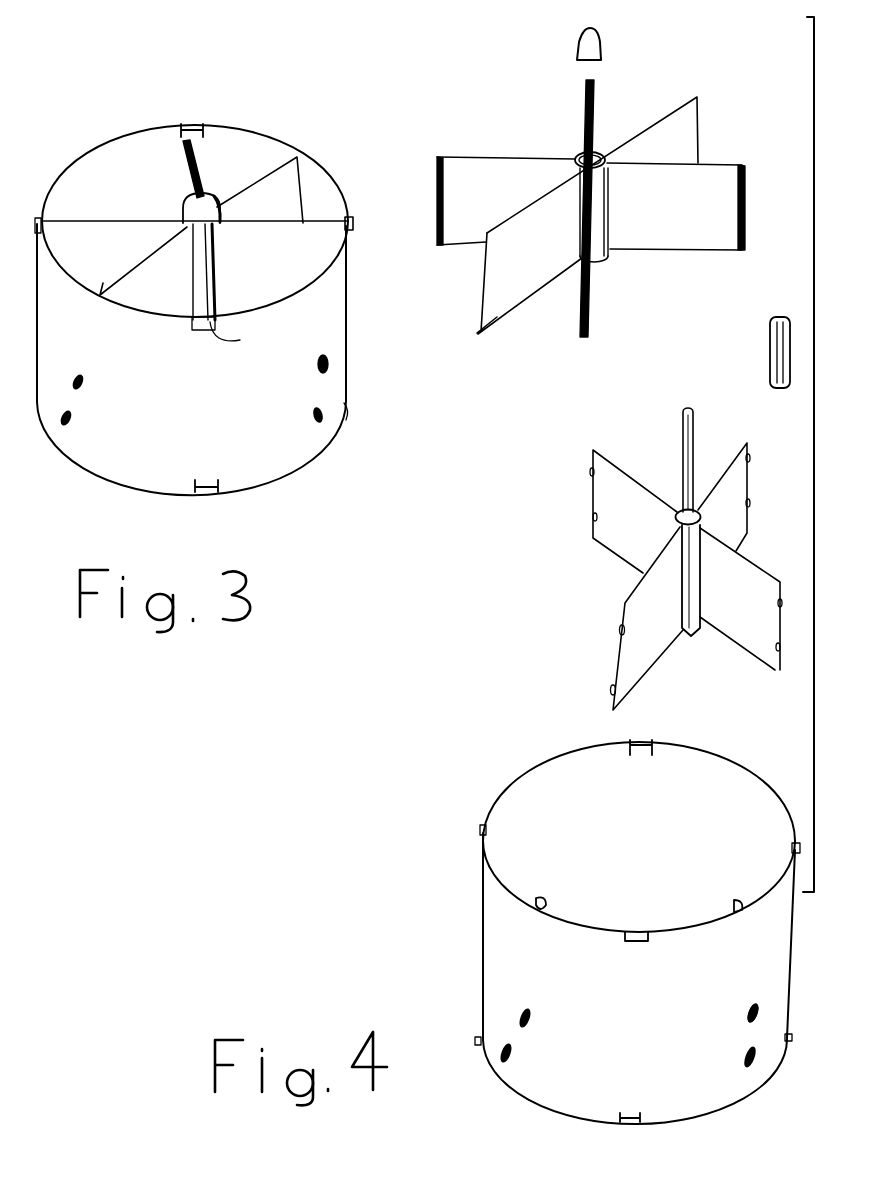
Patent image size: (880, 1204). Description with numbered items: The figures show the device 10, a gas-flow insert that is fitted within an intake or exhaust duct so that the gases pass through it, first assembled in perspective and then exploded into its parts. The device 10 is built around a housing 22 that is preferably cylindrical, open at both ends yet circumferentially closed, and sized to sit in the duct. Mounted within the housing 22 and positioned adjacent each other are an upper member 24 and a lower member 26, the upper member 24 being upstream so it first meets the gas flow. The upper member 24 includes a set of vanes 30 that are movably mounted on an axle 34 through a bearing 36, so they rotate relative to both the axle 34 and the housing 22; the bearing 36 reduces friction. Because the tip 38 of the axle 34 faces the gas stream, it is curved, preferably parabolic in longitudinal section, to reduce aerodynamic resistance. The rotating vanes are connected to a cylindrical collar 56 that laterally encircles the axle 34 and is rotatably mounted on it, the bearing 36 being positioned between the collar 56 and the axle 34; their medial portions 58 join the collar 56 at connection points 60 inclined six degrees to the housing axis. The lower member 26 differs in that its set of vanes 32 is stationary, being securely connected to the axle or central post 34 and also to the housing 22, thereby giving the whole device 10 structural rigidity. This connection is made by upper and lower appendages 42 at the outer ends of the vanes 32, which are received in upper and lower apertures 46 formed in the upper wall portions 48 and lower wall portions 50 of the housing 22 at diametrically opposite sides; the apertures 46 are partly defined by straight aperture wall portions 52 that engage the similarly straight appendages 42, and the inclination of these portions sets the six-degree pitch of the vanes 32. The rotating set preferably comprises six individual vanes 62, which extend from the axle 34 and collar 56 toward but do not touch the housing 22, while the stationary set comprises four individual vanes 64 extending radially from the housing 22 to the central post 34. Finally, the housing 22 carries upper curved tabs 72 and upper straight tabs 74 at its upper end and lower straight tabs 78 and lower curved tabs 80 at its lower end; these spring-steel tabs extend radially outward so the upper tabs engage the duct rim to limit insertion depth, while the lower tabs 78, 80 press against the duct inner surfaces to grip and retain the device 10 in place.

In FIG. 3, the device 10 is at (209, 91).
In FIG. 4, the device 10 is at (702, 61).
In FIG. 3, the housing 22 is at (173, 438).
In FIG. 4, the housing 22 is at (665, 1045).
In FIG. 4, the upper member 24 is at (534, 148).
In FIG. 4, the lower member 26 is at (727, 649).
In FIG. 4, the set of vanes 30 is at (700, 135).
In FIG. 4, the set of vanes 32 is at (750, 482).
In FIG. 3, the axle 34 is at (175, 210).
In FIG. 4, the axle 34 is at (683, 445).
In FIG. 4, the bearing 36 is at (770, 350).
In FIG. 3, the tip 38 is at (215, 195).
In FIG. 4, the tip 38 is at (574, 41).
In FIG. 3, the appendages 42 is at (328, 364).
In FIG. 4, the appendages 42 is at (619, 631).
In FIG. 3, the apertures 46 is at (70, 424).
In FIG. 4, the apertures 46 is at (520, 1015).
In FIG. 4, the upper wall portions 48 is at (507, 915).
In FIG. 4, the lower wall portions 50 is at (495, 1002).
In FIG. 4, the aperture wall portions 52 is at (758, 1010).
In FIG. 4, the collar 56 is at (608, 262).
In FIG. 4, the medial portions 58 is at (615, 213).
In FIG. 4, the connection points 60 is at (575, 265).
In FIG. 4, the individual vanes 62 is at (517, 270).
In FIG. 4, the individual vanes 64 is at (633, 542).
In FIG. 3, the upper curved tabs 72 is at (350, 218).
In FIG. 3, the upper straight tabs 74 is at (240, 340).
In FIG. 4, the upper straight tabs 74 is at (480, 830).
In FIG. 3, the lower straight tabs 78 is at (218, 488).
In FIG. 4, the lower straight tabs 78 is at (476, 1042).
In FIG. 3, the lower curved tabs 80 is at (348, 405).